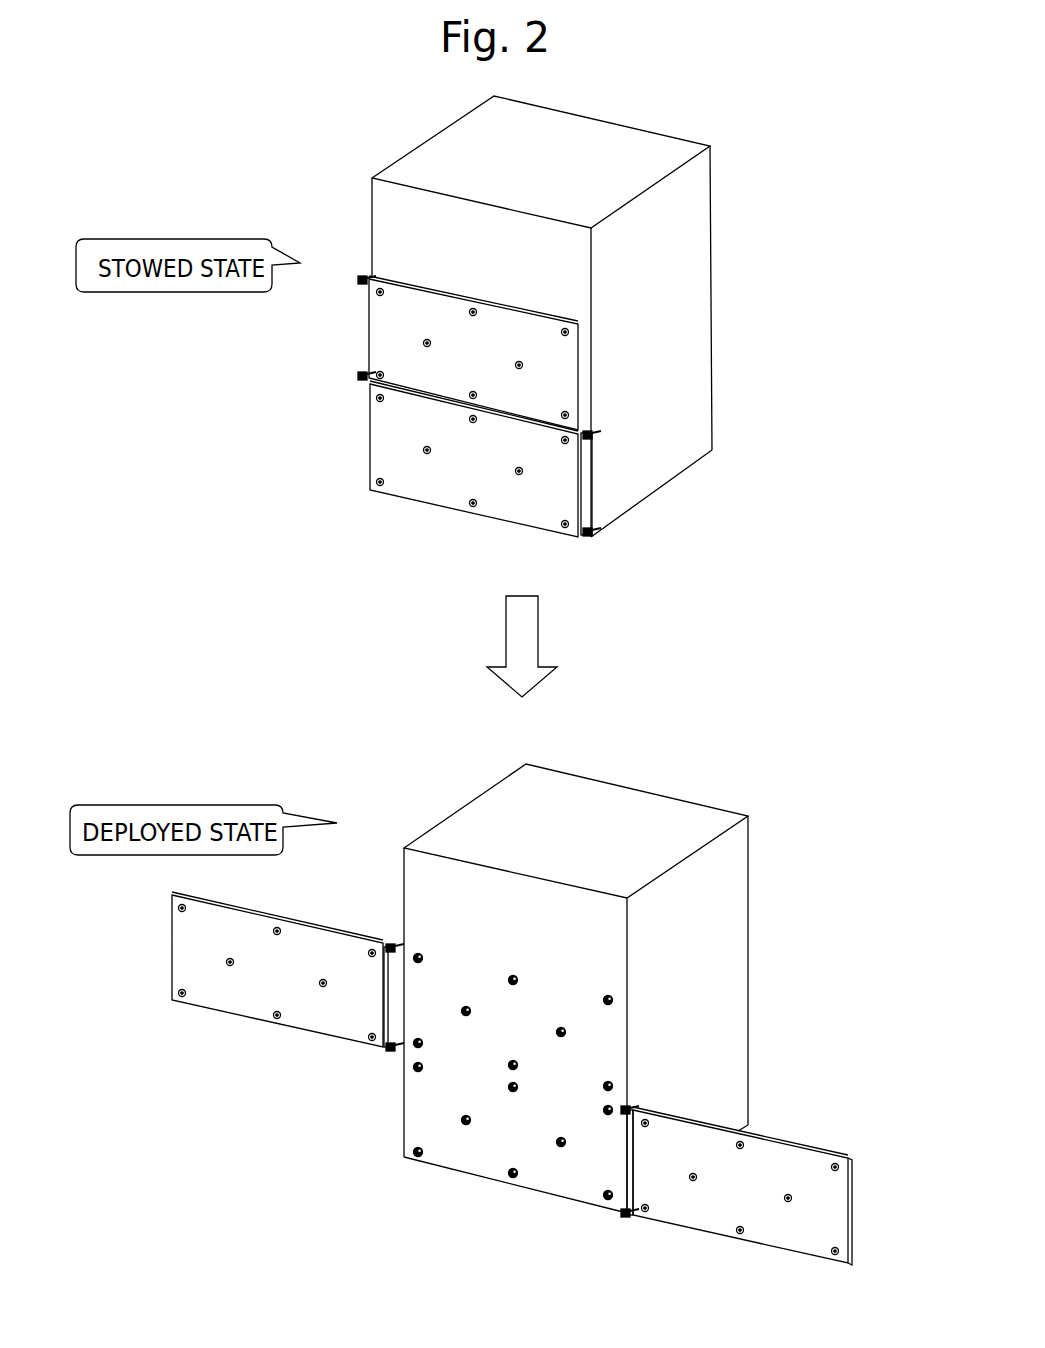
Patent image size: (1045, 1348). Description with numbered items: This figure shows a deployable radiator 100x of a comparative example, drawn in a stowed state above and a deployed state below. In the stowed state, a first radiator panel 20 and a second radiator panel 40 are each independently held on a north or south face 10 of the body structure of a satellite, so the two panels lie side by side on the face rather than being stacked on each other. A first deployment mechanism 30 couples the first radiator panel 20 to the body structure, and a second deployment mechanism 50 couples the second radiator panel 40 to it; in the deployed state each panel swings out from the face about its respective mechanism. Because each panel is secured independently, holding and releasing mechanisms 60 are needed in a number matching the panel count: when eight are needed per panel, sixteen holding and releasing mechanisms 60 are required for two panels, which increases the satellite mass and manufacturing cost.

The deployable radiator 100x is at (619, 115).
The north or south face 10 is at (555, 278).
The first radiator panel 20 is at (510, 490).
The first deployment mechanism 30 is at (590, 445).
The second radiator panel 40 is at (567, 375).
The second deployment mechanism 50 is at (363, 282).
The holding and releasing mechanisms 60 is at (473, 312).